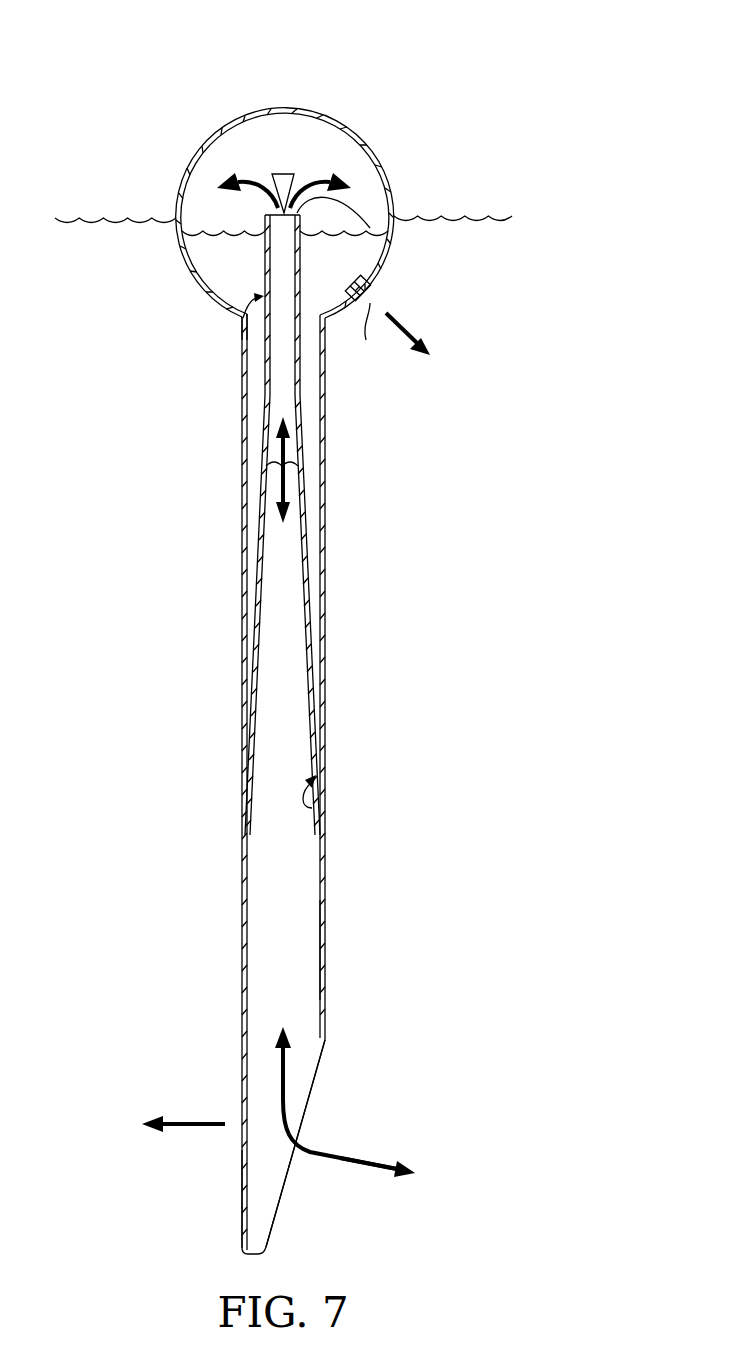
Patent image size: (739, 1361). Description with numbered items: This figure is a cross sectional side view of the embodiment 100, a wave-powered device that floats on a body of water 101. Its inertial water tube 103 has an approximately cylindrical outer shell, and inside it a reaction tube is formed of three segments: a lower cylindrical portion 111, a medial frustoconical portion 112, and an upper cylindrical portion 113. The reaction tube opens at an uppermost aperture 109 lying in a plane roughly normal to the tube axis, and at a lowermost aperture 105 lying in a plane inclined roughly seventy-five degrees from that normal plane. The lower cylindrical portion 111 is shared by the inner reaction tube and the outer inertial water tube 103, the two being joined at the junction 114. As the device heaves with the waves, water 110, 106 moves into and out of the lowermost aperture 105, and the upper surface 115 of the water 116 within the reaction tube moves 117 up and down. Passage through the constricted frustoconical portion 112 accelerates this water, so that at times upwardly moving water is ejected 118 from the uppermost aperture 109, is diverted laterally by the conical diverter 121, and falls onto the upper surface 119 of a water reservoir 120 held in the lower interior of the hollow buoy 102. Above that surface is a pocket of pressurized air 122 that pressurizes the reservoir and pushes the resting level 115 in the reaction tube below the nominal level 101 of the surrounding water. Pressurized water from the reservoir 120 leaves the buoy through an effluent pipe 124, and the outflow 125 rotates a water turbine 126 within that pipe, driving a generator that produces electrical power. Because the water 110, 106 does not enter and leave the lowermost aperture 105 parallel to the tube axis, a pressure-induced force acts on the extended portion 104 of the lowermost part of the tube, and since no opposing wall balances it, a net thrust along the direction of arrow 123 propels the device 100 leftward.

The embodiment 100 is at (103, 68).
The body of water 101 is at (120, 215).
The hollow buoy 102 is at (228, 127).
The inertial water tube 103 is at (325, 620).
The extended portion 104 is at (240, 1210).
The lowermost aperture 105 is at (330, 1093).
The water leaving the lower aperture 106 is at (338, 1164).
The uppermost aperture 109 is at (370, 228).
The water entering the lower aperture 110 is at (280, 1053).
The lower cylindrical portion 111 is at (345, 949).
The medial frustoconical portion 112 is at (325, 520).
The upper cylindrical portion 113 is at (238, 313).
The junction 114 is at (312, 808).
The upper surface of the water within the reaction tube 115 is at (275, 468).
The water within the reaction tube 116 is at (307, 752).
The up and down movement 117 is at (287, 450).
The ejected water 118 is at (296, 204).
The upper surface of the water reservoir 119 is at (207, 232).
The water reservoir 120 is at (256, 276).
The conical diverter 121 is at (284, 172).
The pocket of pressurized air 122 is at (222, 165).
The thrust arrow 123 is at (195, 1130).
The effluent pipe 124 is at (372, 284).
The outflow of pressurized water 125 is at (425, 324).
The water turbine 126 is at (365, 336).